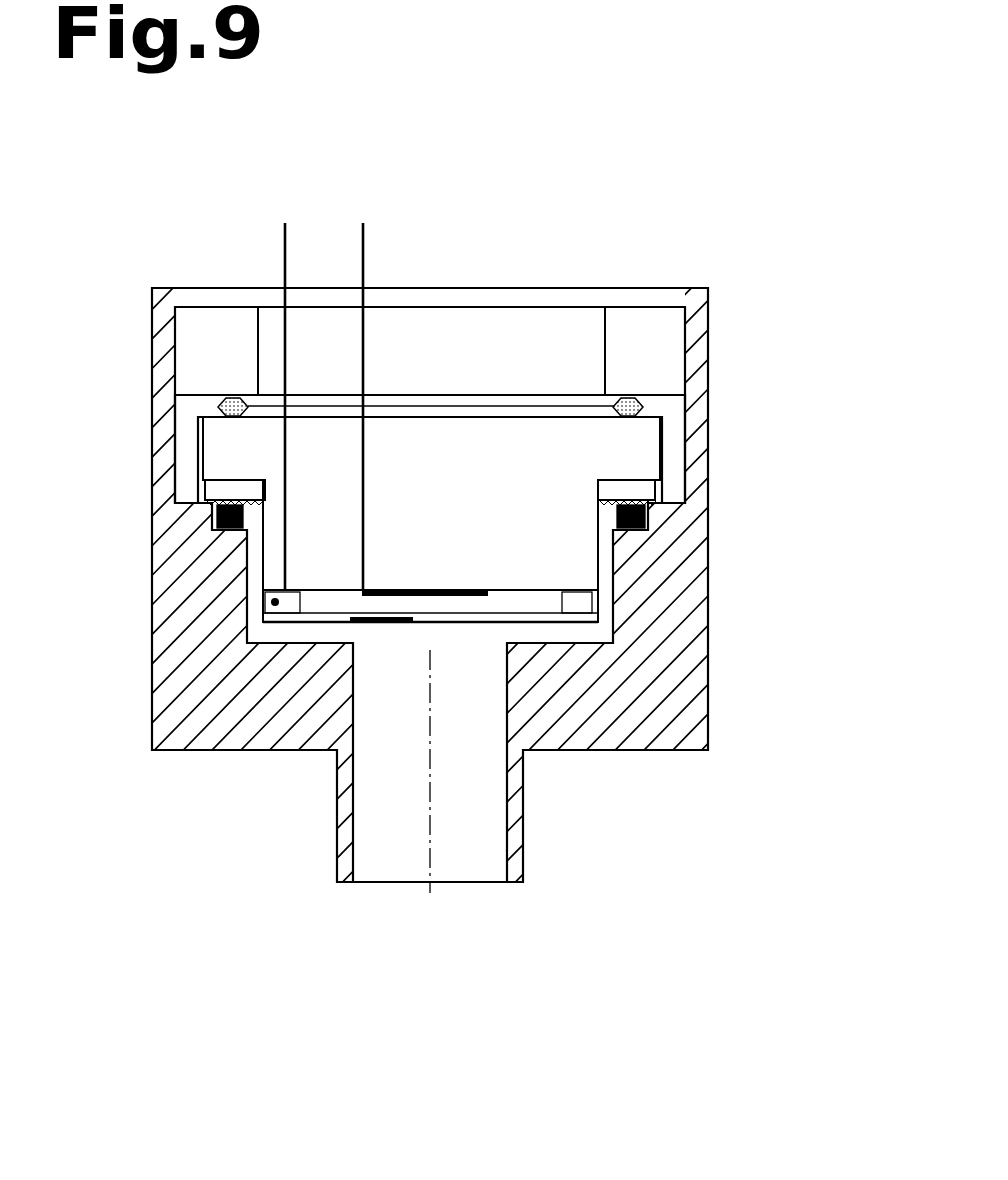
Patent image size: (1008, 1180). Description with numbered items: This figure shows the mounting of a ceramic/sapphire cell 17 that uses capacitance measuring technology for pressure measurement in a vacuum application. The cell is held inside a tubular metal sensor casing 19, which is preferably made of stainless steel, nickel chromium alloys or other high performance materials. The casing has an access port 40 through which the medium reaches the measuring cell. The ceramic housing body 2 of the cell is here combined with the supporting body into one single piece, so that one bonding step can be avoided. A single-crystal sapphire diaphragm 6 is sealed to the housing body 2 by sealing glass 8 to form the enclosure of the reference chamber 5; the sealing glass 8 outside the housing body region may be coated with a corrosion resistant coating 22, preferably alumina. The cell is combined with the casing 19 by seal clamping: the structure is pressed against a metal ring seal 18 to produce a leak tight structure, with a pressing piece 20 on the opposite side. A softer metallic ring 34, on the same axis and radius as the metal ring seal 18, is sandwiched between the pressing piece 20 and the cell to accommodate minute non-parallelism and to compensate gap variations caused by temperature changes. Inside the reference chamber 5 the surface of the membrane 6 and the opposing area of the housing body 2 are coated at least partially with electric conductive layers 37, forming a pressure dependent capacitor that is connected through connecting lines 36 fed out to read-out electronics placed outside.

The ceramic housing body 2 is at (325, 528).
The reference chamber 5 is at (529, 601).
The diaphragm 6 is at (333, 623).
The sealing glass 8 is at (620, 488).
The ceramic cell 17 is at (548, 412).
The metal ring seal 18 is at (222, 535).
The sensor casing 19 is at (698, 306).
The pressing piece 20 is at (217, 349).
The corrosion resistant coating 22 is at (660, 500).
The metallic ring 34 is at (628, 407).
The connecting lines 36 is at (289, 228).
The electric conductive layers 37 is at (415, 618).
The access port 40 is at (470, 832).